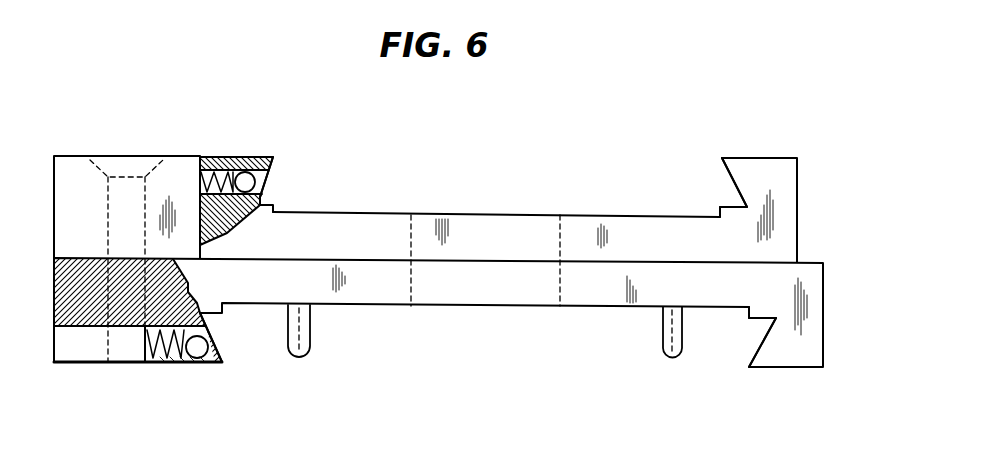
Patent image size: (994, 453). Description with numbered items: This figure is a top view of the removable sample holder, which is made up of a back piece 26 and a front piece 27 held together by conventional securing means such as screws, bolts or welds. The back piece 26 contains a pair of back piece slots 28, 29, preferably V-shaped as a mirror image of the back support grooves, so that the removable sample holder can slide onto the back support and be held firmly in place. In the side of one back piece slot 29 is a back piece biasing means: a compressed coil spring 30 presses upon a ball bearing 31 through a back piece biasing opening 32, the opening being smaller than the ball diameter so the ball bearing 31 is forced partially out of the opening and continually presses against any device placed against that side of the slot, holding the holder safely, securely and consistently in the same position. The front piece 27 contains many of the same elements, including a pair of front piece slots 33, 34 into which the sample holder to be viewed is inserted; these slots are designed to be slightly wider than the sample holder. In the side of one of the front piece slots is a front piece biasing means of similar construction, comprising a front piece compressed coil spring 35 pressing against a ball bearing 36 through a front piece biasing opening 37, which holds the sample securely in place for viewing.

The back piece 26 is at (780, 181).
The front piece 27 is at (812, 333).
The back piece slot 28 is at (730, 197).
The back piece slot 29 is at (265, 197).
The compressed coil spring 30 is at (223, 157).
The ball bearing 31 is at (246, 172).
The back piece biasing opening 32 is at (264, 187).
The front piece slot 33 is at (220, 347).
The front piece slot 34 is at (757, 328).
The front piece compressed coil spring 35 is at (150, 364).
The ball bearing 36 is at (193, 364).
The front piece biasing opening 37 is at (210, 328).